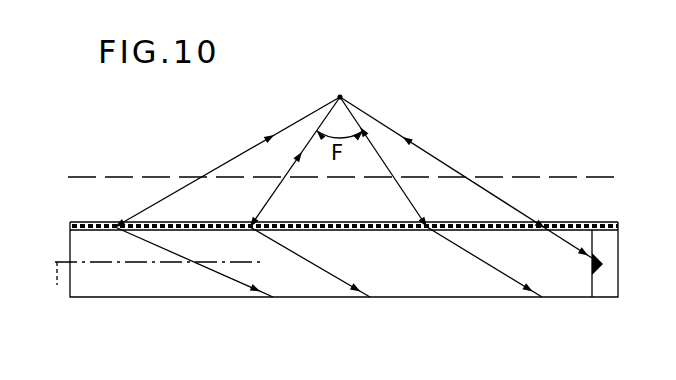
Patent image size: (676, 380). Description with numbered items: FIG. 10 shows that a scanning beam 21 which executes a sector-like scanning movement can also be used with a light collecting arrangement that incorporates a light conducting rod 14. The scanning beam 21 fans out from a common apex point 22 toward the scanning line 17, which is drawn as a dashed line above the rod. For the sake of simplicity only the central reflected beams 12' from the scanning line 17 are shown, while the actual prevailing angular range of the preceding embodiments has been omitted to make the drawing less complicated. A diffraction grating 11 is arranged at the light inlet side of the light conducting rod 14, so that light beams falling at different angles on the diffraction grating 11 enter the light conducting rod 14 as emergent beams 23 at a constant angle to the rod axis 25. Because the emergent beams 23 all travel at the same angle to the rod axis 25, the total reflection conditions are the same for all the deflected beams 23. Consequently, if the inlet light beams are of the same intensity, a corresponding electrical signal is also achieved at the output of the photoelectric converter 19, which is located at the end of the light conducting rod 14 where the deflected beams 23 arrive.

The focal point / light source point 22 is at (340, 97).
The scanning beam 21 is at (292, 170).
The scanning line 17 is at (516, 177).
The light conducting rod 14 is at (140, 292).
The diffraction grating 11 is at (350, 222).
The central reflected beams 12' is at (349, 210).
The emergent beams 23 is at (217, 268).
The photoelectric converter 19 is at (608, 292).
The rod axis 25 is at (57, 283).